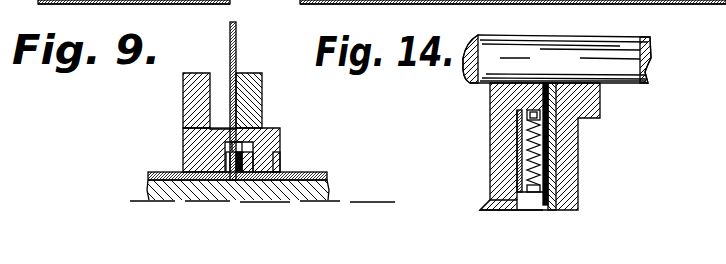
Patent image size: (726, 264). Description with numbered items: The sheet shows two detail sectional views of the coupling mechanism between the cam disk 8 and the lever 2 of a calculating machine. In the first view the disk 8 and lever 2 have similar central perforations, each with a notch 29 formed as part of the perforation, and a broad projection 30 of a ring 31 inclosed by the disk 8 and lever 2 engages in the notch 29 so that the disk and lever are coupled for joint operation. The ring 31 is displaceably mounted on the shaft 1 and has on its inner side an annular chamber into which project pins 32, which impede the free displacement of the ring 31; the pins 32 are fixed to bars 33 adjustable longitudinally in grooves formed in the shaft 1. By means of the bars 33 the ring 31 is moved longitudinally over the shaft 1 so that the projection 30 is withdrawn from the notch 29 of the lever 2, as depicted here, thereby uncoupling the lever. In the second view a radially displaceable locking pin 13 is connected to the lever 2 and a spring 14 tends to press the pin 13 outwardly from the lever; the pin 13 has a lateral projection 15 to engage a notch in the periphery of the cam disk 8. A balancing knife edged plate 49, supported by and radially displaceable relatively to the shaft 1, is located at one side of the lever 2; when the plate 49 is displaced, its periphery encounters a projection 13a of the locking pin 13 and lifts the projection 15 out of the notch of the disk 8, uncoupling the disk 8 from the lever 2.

In FIG. 14, the shaft 1 is at (648, 74).
In FIG. 9, the lever 2 is at (236, 38).
In FIG. 14, the lever 2 is at (552, 105).
In FIG. 14, the disk 8 is at (553, 134).
In FIG. 14, the locking pin 13 is at (549, 190).
In FIG. 14, the projection of the locking pin 13a is at (515, 196).
In FIG. 14, the spring 14 is at (492, 157).
In FIG. 14, the lateral projection 15 is at (556, 209).
In FIG. 9, the notch 29 is at (228, 150).
In FIG. 9, the broad projection 30 is at (243, 146).
In FIG. 9, the ring 31 is at (236, 157).
In FIG. 9, the pins 32 is at (252, 166).
In FIG. 9, the bars 33 is at (327, 177).
In FIG. 14, the balancing knife edged plate 49 is at (520, 182).